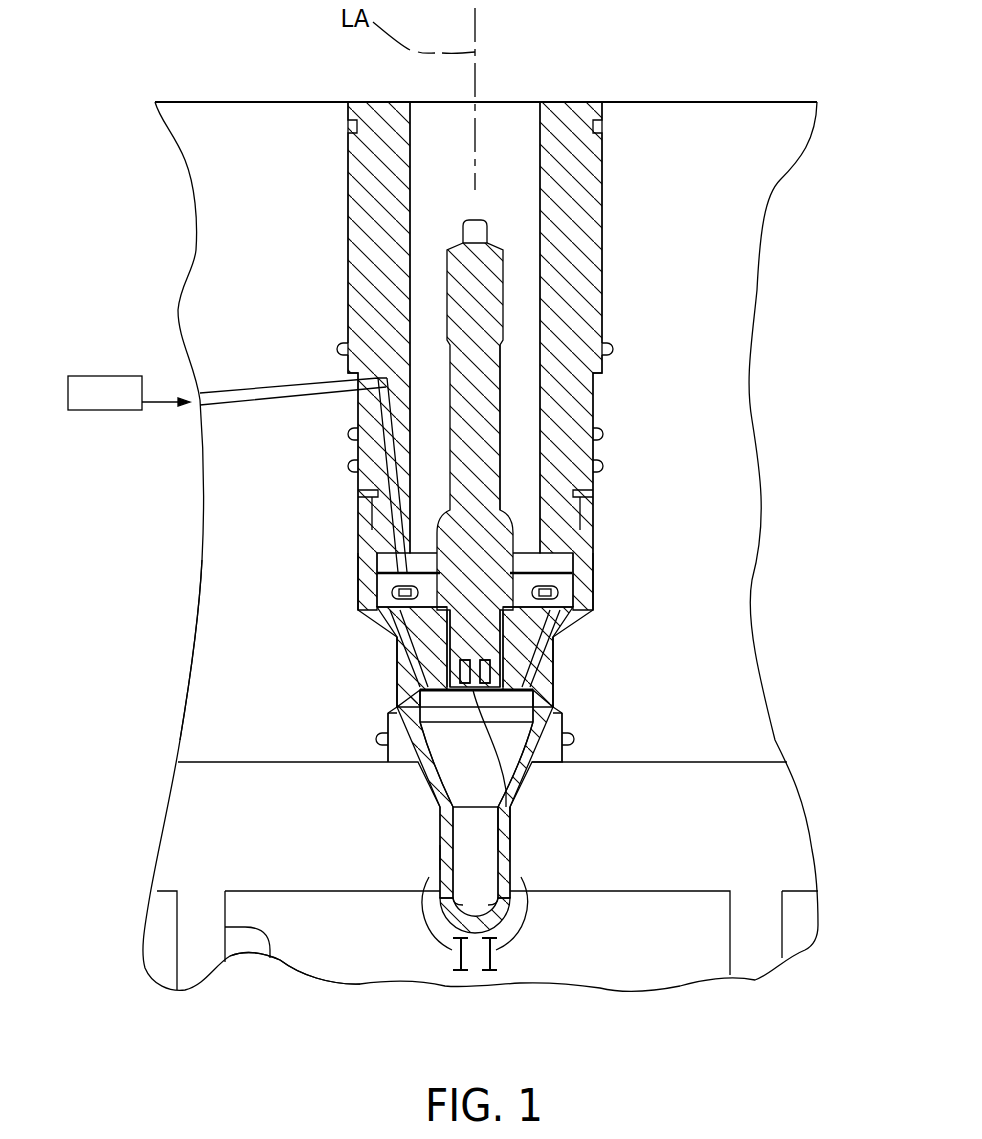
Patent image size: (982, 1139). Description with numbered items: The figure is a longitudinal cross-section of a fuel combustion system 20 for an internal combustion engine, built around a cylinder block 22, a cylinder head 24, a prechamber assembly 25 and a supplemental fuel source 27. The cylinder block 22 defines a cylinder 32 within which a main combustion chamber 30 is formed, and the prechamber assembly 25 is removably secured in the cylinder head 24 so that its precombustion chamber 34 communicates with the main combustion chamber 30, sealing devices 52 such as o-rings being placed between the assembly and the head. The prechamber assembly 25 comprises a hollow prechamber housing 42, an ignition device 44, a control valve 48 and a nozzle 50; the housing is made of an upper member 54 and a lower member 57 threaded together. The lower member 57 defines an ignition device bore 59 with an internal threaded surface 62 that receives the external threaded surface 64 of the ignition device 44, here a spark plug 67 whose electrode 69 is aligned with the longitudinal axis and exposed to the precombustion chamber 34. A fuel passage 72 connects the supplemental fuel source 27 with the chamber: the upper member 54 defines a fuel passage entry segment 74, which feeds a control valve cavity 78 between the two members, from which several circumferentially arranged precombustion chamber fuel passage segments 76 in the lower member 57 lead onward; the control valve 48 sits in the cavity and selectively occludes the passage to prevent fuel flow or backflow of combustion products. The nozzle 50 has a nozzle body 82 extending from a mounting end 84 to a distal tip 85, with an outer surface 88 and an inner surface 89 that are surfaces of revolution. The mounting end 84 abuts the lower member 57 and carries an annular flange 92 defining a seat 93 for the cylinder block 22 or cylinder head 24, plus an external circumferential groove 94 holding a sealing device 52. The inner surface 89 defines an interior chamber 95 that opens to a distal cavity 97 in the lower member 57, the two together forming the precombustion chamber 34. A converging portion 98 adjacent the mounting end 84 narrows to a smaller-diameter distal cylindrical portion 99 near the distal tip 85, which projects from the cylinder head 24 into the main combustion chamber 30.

The fuel combustion system 20 is at (206, 84).
The cylinder block 22 is at (190, 925).
The cylinder head 24 is at (205, 611).
The prechamber assembly 25 is at (380, 692).
The supplemental fuel source 27 is at (97, 392).
The main combustion chamber 30 is at (334, 935).
The cylinder 32 is at (270, 958).
The precombustion chamber 34 is at (440, 845).
The prechamber housing 42 is at (346, 527).
The ignition device 44 is at (455, 337).
The control valve 48 is at (393, 615).
The nozzle 50 is at (440, 856).
The sealing device 52 is at (347, 347).
The upper member 54 is at (348, 212).
The lower member 57 is at (385, 572).
The ignition device bore 59 is at (520, 650).
The internal threaded surface 62 is at (520, 655).
The external threaded surface 64 is at (518, 672).
The spark plug 67 is at (503, 390).
The electrode 69 is at (520, 806).
The fuel passage 72 is at (360, 480).
The fuel passage entry segment 74 is at (380, 388).
The precombustion chamber fuel passage segments 76 is at (397, 675).
The control valve cavity 78 is at (486, 634).
The nozzle body 82 is at (512, 842).
The mounting end 84 is at (568, 736).
The distal tip 85 is at (467, 890).
The outer surface 88 is at (522, 853).
The inner surface 89 is at (459, 873).
The annular flange 92 is at (545, 780).
The seat 93 is at (437, 750).
The external circumferential groove 94 is at (462, 708).
The interior chamber 95 is at (427, 878).
The distal cavity 97 is at (462, 830).
The converging portion 98 is at (503, 828).
The distal cylindrical portion 99 is at (528, 872).